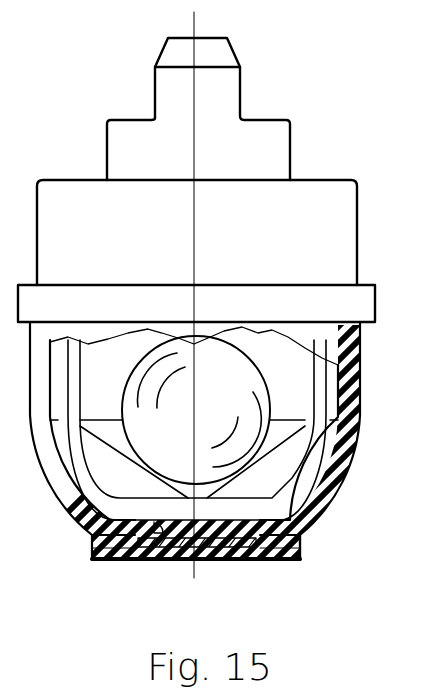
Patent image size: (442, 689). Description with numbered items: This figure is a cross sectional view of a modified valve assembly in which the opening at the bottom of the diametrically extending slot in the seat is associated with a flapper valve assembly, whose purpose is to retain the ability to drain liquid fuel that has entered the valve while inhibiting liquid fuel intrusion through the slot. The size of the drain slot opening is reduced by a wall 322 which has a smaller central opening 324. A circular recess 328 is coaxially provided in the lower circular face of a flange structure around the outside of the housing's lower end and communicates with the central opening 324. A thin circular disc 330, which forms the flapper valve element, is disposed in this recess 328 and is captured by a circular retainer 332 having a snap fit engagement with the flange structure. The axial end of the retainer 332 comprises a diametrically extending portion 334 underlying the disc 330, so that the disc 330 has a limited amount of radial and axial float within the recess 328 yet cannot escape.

The wall 322 is at (93, 532).
The central opening 324 is at (150, 565).
The circular recess 328 is at (260, 565).
The thin circular disc 330 is at (207, 566).
The circular retainer 332 is at (300, 563).
The diametrically extending portion 334 is at (120, 553).